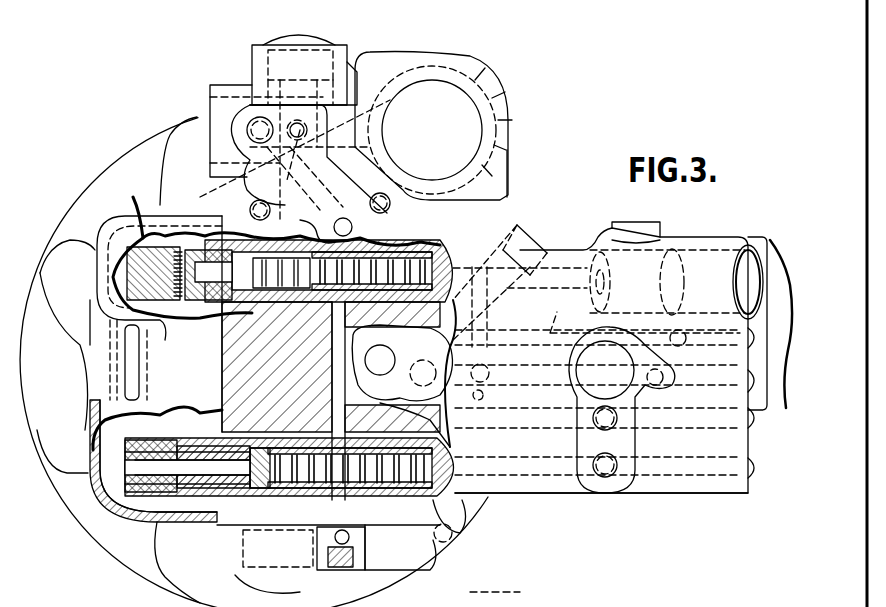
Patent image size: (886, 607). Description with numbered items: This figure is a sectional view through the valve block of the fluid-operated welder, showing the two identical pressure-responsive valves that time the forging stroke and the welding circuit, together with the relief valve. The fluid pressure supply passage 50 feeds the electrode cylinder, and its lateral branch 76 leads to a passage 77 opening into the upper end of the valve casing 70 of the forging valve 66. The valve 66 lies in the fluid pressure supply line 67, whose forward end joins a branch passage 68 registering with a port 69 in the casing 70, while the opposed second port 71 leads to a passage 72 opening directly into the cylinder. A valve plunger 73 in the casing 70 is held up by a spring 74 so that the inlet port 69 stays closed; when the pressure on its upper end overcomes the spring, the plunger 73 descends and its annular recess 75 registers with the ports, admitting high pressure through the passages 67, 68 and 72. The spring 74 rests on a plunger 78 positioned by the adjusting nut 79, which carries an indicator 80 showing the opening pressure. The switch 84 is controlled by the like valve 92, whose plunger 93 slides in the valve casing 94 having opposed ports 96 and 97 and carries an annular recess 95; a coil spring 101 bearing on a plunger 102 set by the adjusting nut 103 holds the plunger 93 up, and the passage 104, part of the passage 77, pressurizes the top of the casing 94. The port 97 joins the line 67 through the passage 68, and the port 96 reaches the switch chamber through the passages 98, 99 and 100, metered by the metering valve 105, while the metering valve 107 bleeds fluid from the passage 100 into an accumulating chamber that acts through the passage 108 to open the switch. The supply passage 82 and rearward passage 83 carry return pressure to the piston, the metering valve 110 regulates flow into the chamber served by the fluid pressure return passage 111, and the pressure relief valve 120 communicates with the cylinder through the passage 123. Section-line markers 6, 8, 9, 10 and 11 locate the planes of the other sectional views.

The section line 6 is at (412, 373).
The section line 8 is at (122, 128).
The section line 9 is at (483, 43).
The section line 10 is at (252, 18).
The section line 11 is at (472, 223).
The fluid pressure supply passage 50 is at (518, 373).
The valve 66 is at (417, 507).
The fluid pressure supply line 67 is at (525, 417).
The branch passage 68 is at (222, 365).
The port 69 is at (210, 435).
The valve casing 70 is at (363, 497).
The second port 71 is at (330, 497).
The passage 72 is at (337, 540).
The valve plunger 73 is at (400, 513).
The spring 74 is at (435, 450).
The annular recess 75 is at (388, 447).
The lateral branch 76 is at (486, 370).
The passage 77 is at (480, 393).
The plunger 78 is at (220, 528).
The adjusting nut 79 is at (133, 485).
The indicator 80 is at (117, 513).
The fluid pressure supply passage 82 is at (458, 547).
The passage 83 is at (547, 467).
The switch 84 is at (511, 118).
The valve 92 is at (408, 230).
The plunger 93 is at (440, 270).
The valve casing 94 is at (425, 238).
The annular recess 95 is at (398, 215).
The port 96 is at (400, 406).
The port 97 is at (262, 322).
The passage 98 is at (262, 174).
The passage 99 is at (213, 117).
The passage 100 is at (363, 48).
The coil spring 101 is at (507, 194).
The plunger 102 is at (223, 322).
The adjusting nut 103 is at (150, 212).
The passage 104 is at (505, 300).
The metering valve 105 is at (169, 126).
The metering valve 107 is at (280, 61).
The passage 108 is at (215, 199).
The metering valve 110 is at (260, 580).
The fluid pressure return passage 111 is at (645, 317).
The pressure relief valve 120 is at (700, 260).
The passage 123 is at (662, 222).